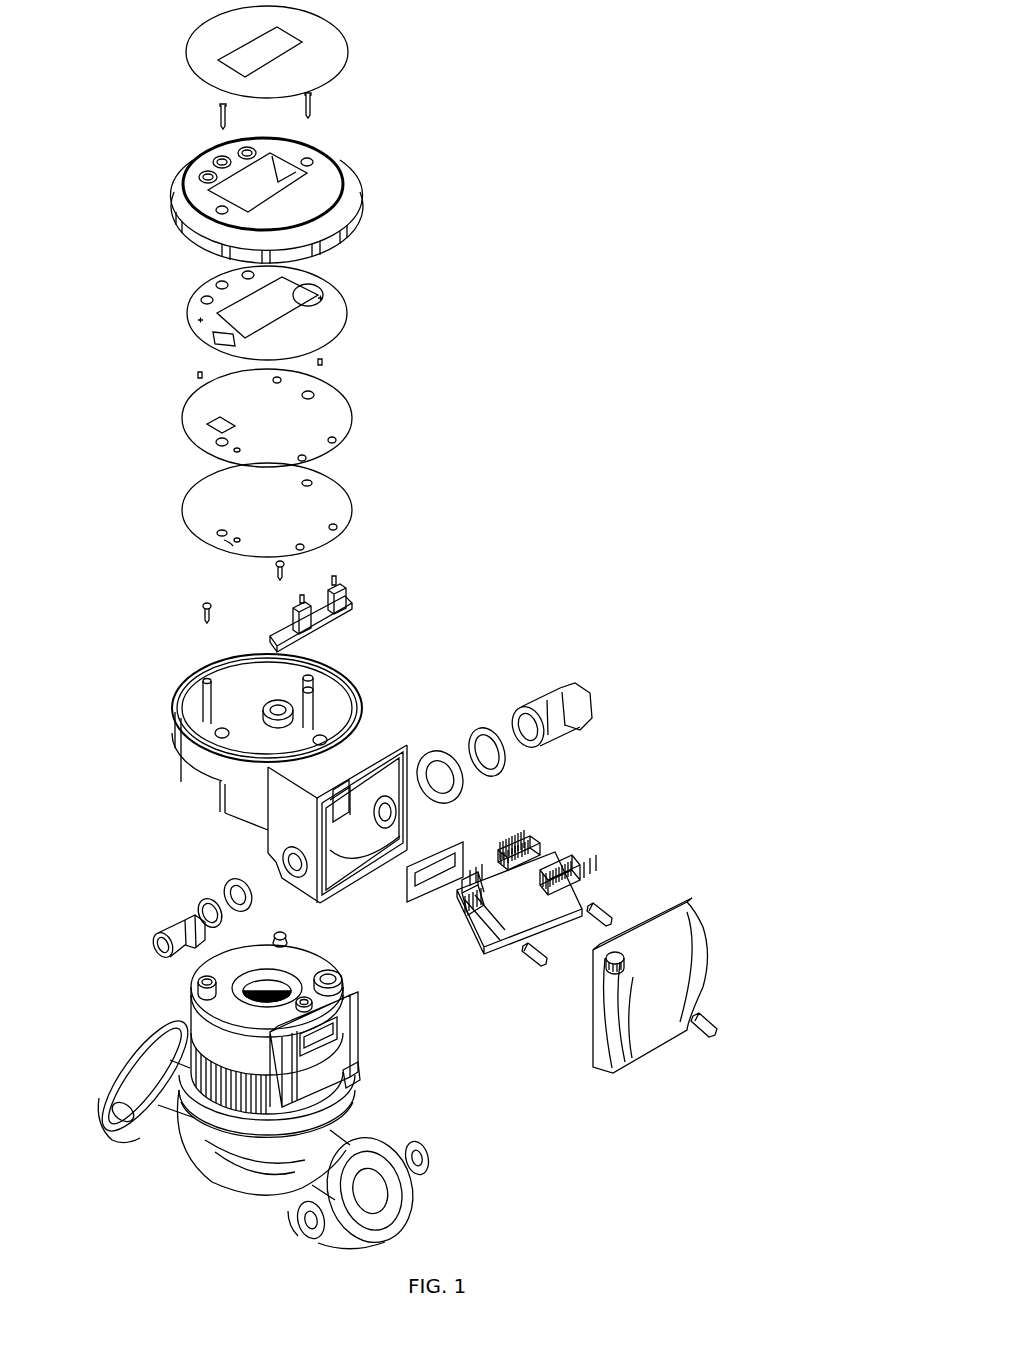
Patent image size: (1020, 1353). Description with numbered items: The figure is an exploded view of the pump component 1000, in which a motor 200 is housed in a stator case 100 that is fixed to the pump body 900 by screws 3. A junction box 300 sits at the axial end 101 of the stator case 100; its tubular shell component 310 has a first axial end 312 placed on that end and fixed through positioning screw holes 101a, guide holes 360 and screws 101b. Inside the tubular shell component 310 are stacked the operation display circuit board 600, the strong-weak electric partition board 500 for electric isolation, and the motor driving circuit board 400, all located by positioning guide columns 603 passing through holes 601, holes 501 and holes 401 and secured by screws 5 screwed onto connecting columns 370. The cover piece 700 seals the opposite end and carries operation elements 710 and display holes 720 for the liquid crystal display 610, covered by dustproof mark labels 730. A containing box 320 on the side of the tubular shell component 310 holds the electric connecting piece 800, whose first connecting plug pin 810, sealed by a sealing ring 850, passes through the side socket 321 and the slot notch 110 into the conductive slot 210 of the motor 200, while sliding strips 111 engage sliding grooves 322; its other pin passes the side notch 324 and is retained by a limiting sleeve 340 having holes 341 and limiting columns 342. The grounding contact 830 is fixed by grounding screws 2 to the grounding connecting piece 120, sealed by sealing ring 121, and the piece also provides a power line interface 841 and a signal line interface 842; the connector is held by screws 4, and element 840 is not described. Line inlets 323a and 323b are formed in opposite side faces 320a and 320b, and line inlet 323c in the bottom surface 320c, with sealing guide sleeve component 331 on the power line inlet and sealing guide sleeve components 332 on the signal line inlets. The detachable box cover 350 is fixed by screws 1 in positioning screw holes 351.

The pump component 1000 is at (545, 172).
The dustproof mark labels 730 is at (318, 33).
The screws 5 is at (216, 118).
The cover piece 700 is at (333, 240).
The operation elements 710 is at (216, 152).
The display holes 720 is at (240, 192).
The positioning guide columns 603 is at (327, 173).
The operation display circuit board 600 is at (327, 322).
The liquid crystal display 610 is at (282, 302).
The holes 601 is at (227, 340).
The strong-weak electric partition board 500 is at (333, 417).
The holes 501 is at (233, 447).
The motor driving circuit board 400 is at (323, 498).
The holes 401 is at (233, 543).
The screws 101b is at (200, 610).
The limiting sleeve 340 is at (350, 612).
The holes 341 is at (292, 616).
The limiting columns 342 is at (338, 585).
The junction box 300 is at (345, 659).
The tubular shell component 310 is at (265, 677).
The grounding screws 2 is at (200, 707).
The side notch 324 is at (307, 717).
The guide holes 360 is at (290, 750).
The connecting columns 370 is at (172, 720).
The positioning screw holes 351 is at (363, 730).
The first axial end 312 is at (177, 790).
The side socket 321 is at (273, 792).
The containing box 320 is at (383, 700).
The side face 320a is at (413, 805).
The line inlet 323a is at (412, 824).
The side face 320b is at (273, 815).
The sliding grooves 322 is at (267, 832).
The line inlet 323b is at (283, 867).
The bottom surface 320c is at (340, 903).
The line inlet 323c is at (348, 887).
The sealing ring 850 is at (408, 903).
The sealing guide sleeve component 331 is at (527, 700).
The sealing guide sleeve components 332 is at (163, 925).
The stator case 100 is at (367, 1064).
The axial end 101 is at (203, 967).
The positioning screw holes 101a is at (198, 990).
The motor 200 is at (282, 982).
The grounding connecting piece 120 is at (336, 972).
The sealing ring 121 is at (342, 983).
The slot notch 110 is at (362, 1025).
The sliding strips 111 is at (362, 1000).
The conductive slot 210 is at (358, 1047).
The screws 3 is at (357, 1077).
The pump body 900 is at (180, 1170).
The detachable box cover 350 is at (683, 935).
The screws 1 is at (612, 968).
The screws 4 is at (613, 909).
The electric connecting piece 800 is at (585, 843).
The first connecting plug pin 810 is at (470, 917).
The grounding contact 830 is at (527, 840).
The pins 840 is at (512, 843).
The power line interface 841 is at (578, 888).
The signal line interface 842 is at (483, 948).